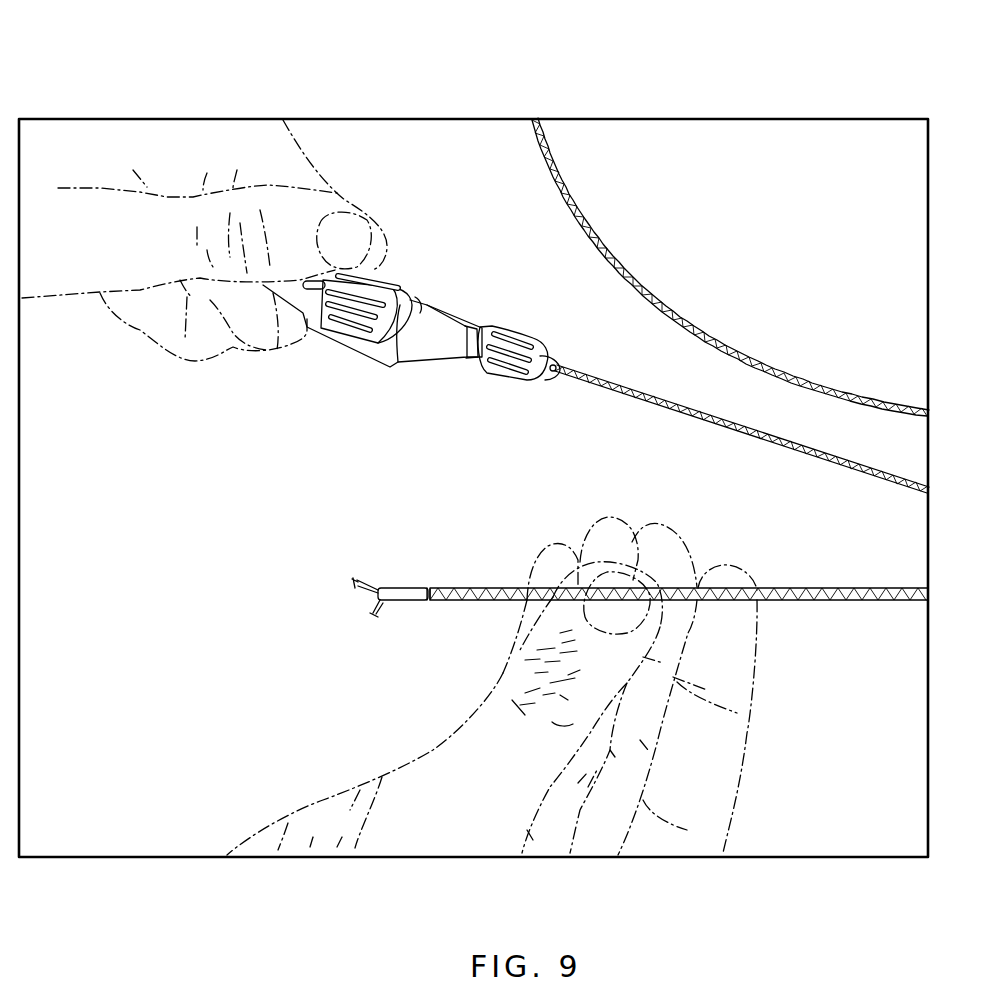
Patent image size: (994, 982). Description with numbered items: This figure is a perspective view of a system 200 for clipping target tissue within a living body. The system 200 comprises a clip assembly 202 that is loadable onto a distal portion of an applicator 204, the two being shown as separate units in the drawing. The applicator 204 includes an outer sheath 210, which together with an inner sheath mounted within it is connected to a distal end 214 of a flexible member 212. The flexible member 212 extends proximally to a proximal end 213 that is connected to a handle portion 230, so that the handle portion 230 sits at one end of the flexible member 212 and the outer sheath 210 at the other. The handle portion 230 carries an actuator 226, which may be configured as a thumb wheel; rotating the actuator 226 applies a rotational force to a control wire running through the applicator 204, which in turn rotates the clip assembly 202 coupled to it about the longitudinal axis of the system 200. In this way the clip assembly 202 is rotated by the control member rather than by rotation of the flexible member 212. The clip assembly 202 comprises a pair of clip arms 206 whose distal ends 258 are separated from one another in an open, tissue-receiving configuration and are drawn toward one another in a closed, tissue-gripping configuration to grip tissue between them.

The system 200 is at (444, 158).
The clip assembly 202 is at (611, 578).
The applicator 204 is at (418, 337).
The clip arms 206 is at (346, 603).
The outer sheath 210 is at (402, 597).
The flexible member 212 is at (653, 407).
The proximal end 213 is at (560, 374).
The distal end 214 is at (438, 588).
The actuator 226 is at (358, 283).
The handle portion 230 is at (452, 313).
The distal ends 258 is at (358, 576).